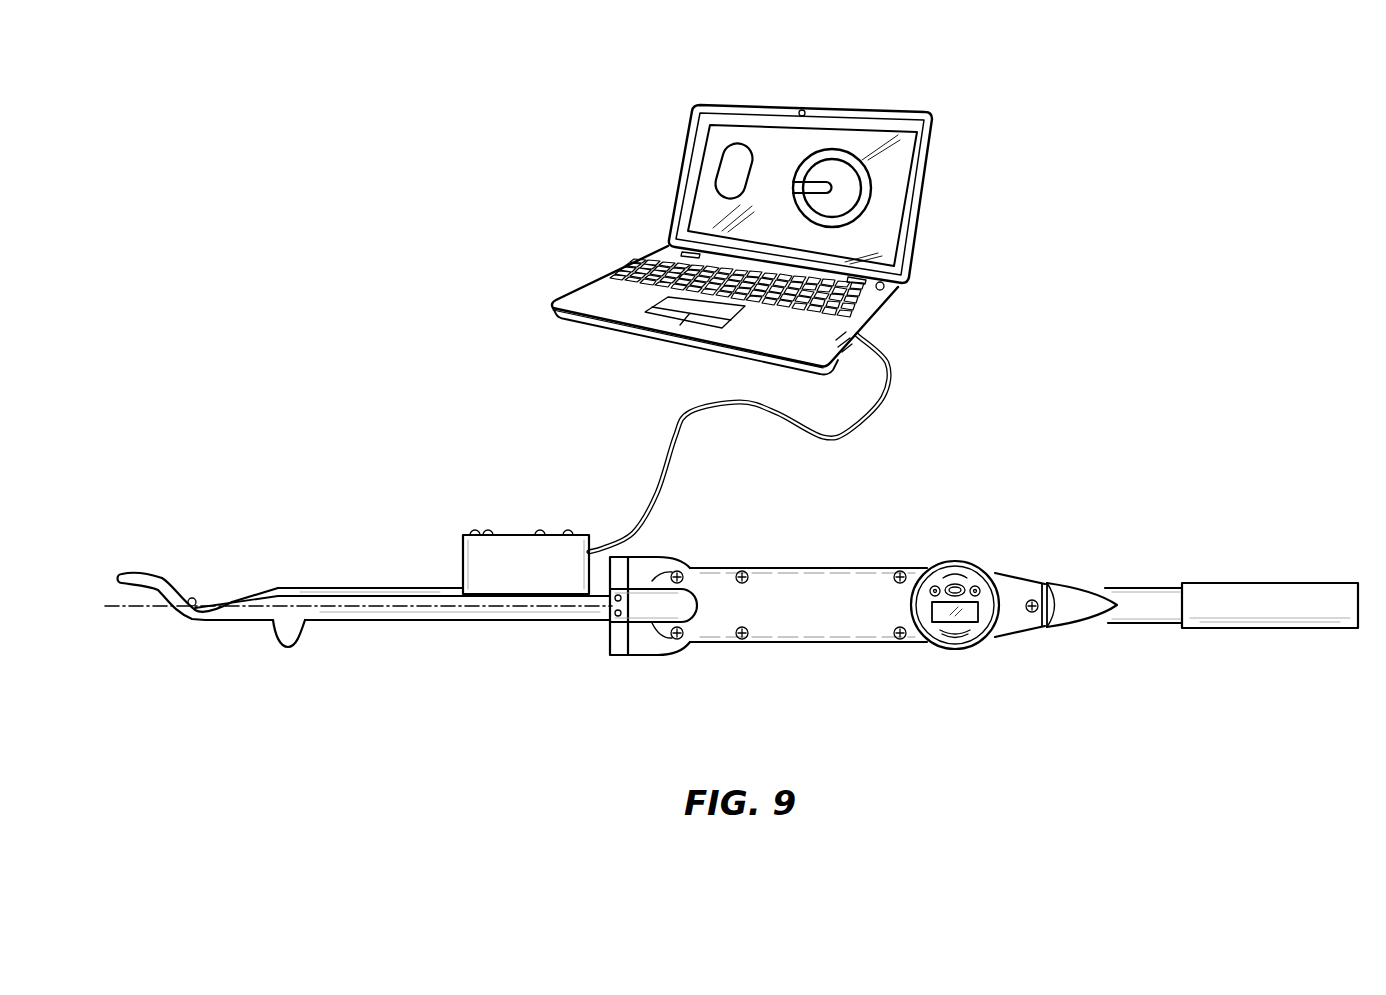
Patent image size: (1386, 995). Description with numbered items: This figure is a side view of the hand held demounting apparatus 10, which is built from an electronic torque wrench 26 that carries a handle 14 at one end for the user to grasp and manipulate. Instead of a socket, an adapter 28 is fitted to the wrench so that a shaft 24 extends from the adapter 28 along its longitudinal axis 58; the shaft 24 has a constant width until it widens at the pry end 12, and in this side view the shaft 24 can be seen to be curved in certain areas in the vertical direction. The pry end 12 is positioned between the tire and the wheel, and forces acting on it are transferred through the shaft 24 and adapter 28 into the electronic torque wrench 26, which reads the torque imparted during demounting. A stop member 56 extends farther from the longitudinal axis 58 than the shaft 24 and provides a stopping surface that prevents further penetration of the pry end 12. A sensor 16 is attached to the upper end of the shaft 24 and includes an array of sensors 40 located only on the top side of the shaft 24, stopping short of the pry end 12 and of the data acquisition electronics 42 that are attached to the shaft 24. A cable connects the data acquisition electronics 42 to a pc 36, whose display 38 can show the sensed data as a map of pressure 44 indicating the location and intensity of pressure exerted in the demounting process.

The apparatus 10 is at (732, 578).
The pry end 12 is at (170, 588).
The handle 14 is at (1255, 612).
The sensor 16 is at (313, 583).
The shaft 24 is at (502, 612).
The electronic torque wrench 26 is at (645, 547).
The adapter 28 is at (608, 643).
The pc 36 is at (760, 225).
The display 38 is at (880, 183).
The array of sensors 40 is at (259, 588).
The data acquisition electronics 42 is at (480, 565).
The map of pressure 44 is at (732, 165).
The stop member 56 is at (288, 633).
The longitudinal axis 58 is at (358, 607).